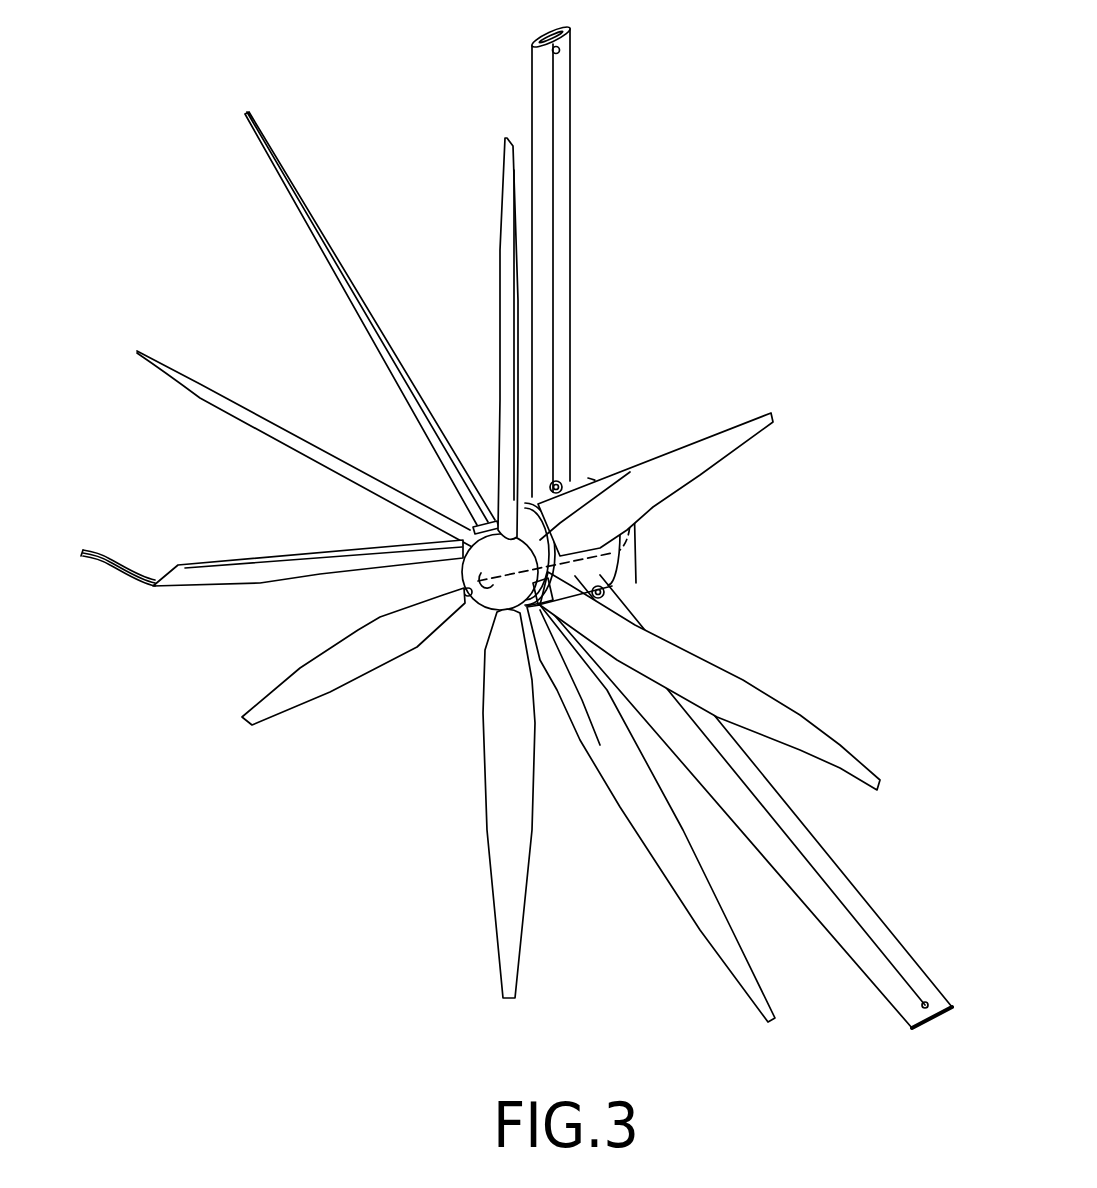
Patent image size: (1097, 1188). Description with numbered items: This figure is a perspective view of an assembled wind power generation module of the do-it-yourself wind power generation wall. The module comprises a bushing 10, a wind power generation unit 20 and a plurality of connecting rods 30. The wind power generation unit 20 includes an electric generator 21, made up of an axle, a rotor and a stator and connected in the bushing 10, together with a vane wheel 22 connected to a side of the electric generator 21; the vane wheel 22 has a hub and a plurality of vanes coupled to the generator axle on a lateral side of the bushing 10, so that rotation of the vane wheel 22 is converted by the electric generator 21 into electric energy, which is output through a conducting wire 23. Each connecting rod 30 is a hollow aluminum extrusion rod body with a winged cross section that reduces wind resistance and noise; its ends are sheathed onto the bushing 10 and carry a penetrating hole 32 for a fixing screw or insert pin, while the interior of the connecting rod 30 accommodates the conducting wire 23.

The bushing 10 is at (624, 570).
The wind power generation unit 20 is at (600, 465).
The electric generator 21 is at (586, 468).
The vane wheel 22 is at (495, 853).
The conducting wire 23 is at (110, 562).
The connecting rod 30 is at (568, 233).
The penetrating hole 32 is at (560, 50).